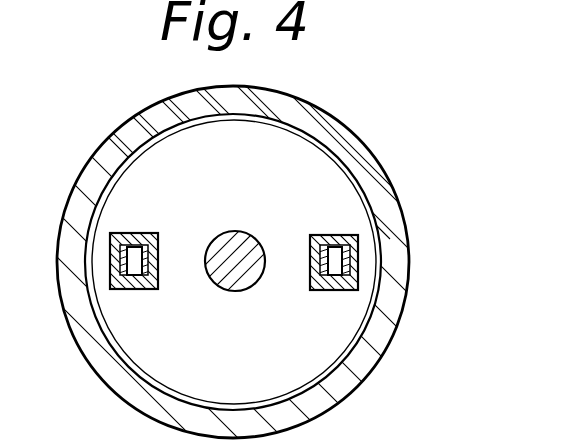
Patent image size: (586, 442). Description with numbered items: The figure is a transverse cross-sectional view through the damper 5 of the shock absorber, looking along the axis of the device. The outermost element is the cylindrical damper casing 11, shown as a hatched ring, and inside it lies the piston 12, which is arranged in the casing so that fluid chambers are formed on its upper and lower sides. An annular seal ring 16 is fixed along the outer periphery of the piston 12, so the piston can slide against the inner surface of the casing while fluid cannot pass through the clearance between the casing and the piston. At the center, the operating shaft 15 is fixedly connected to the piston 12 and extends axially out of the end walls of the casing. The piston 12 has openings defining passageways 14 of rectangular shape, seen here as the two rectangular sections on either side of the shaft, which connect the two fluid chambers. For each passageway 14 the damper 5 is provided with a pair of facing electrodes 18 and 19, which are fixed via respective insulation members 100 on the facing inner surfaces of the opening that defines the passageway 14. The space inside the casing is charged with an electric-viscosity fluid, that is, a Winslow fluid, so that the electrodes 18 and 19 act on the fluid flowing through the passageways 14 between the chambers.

The damper 5 is at (376, 134).
The damper casing 11 is at (383, 187).
The piston 12 is at (347, 325).
The annular seal ring 16 is at (380, 240).
The operating shaft 15 is at (225, 233).
The passageway 14 is at (335, 292).
The electrode 18 is at (322, 245).
The electrode 19 is at (338, 247).
The insulation member 100 is at (328, 267).